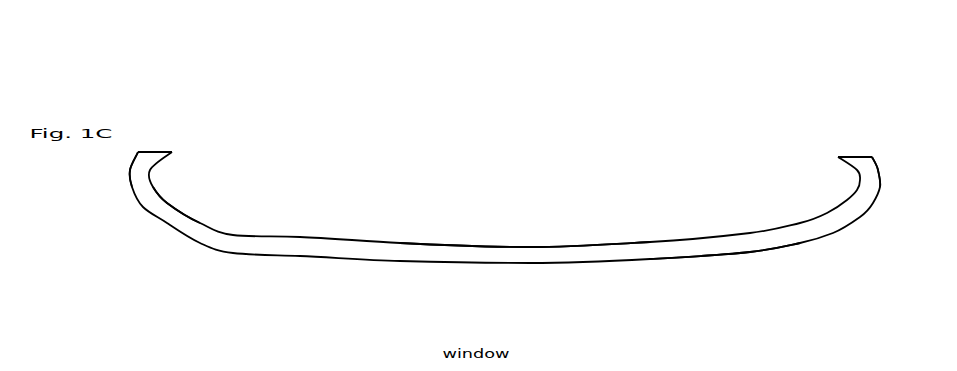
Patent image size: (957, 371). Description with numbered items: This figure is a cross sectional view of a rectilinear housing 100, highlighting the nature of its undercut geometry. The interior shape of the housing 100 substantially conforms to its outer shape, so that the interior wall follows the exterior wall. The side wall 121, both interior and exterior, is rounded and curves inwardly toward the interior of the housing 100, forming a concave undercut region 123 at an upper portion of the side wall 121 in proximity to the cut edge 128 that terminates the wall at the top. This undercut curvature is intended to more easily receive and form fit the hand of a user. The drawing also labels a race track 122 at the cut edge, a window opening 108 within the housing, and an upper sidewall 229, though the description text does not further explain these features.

The housing 100 is at (232, 273).
The side wall 121 is at (128, 206).
The race track 122 is at (853, 145).
The concave undercut region 123 is at (192, 186).
The cut edge 128 is at (830, 146).
The window opening 108 is at (443, 147).
The upper sidewall 229 is at (742, 307).